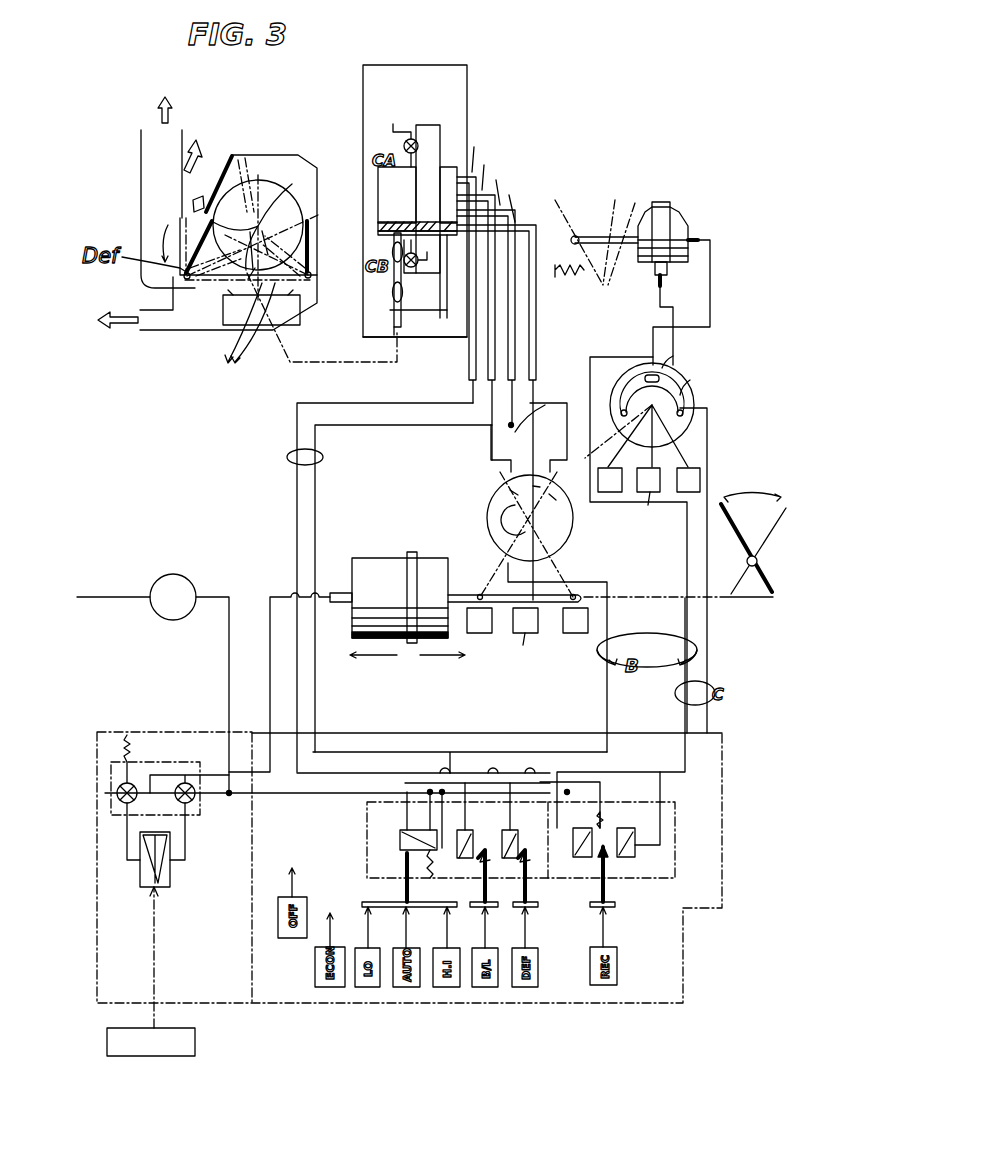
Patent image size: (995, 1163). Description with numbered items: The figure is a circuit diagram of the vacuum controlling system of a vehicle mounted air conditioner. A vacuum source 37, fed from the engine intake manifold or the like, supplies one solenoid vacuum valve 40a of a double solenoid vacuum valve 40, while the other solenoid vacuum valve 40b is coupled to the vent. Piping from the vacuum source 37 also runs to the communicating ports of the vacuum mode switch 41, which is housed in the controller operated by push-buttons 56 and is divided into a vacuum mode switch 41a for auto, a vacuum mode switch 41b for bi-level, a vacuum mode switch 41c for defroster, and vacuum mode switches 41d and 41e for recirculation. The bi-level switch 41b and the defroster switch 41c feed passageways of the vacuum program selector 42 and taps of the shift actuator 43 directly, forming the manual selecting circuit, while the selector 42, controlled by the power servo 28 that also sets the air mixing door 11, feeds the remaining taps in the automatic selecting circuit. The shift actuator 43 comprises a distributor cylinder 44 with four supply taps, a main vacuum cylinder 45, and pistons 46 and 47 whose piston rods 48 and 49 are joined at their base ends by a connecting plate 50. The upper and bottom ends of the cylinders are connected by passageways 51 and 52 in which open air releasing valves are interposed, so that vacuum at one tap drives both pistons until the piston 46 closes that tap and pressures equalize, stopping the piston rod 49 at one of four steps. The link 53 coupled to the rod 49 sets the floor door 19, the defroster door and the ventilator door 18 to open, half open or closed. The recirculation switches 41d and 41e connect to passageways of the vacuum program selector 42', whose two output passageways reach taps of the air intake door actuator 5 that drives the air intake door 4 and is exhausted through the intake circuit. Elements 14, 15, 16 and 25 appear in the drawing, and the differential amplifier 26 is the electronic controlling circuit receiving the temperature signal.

The air intake door 4 is at (572, 212).
The air intake door actuator 5 is at (662, 203).
The air mixing door 11 is at (785, 510).
The vent outlet duct 14 is at (147, 123).
The air outlet 15 is at (203, 142).
The heater core 16 is at (232, 320).
The ventilator door 18 is at (217, 168).
The floor door 19 is at (312, 244).
The control circuit 25 is at (155, 1057).
The differential amplifier 26 is at (162, 872).
The power servo 28 is at (378, 558).
The vacuum source 37 is at (196, 582).
The double solenoid vacuum valve 40 is at (178, 762).
The solenoid vacuum valve 40a is at (195, 800).
The solenoid vacuum valve 40b is at (117, 793).
The vacuum mode switch 41 is at (676, 872).
The vacuum mode switch for auto 41a is at (400, 840).
The vacuum mode switch for bi-level 41b is at (465, 830).
The vacuum mode switch for defroster 41c is at (510, 790).
The vacuum mode switch for recirculation 41d is at (578, 858).
The vacuum mode switch for recirculation 41e is at (636, 845).
The vacuum program selector 42 is at (447, 578).
The vacuum program selector 42' is at (672, 486).
The shift actuator 43 is at (467, 105).
The distributor cylinder 44 is at (452, 167).
The main vacuum cylinder 45 is at (380, 168).
The piston 46 is at (425, 200).
The piston 47 is at (393, 220).
The piston rod 48 is at (447, 282).
The piston rod 49 is at (393, 295).
The connecting plate 50 is at (430, 337).
The passageway 51 is at (428, 125).
The passageway 52 is at (427, 277).
The link 53 is at (262, 205).
The push-buttons 56 is at (310, 1003).